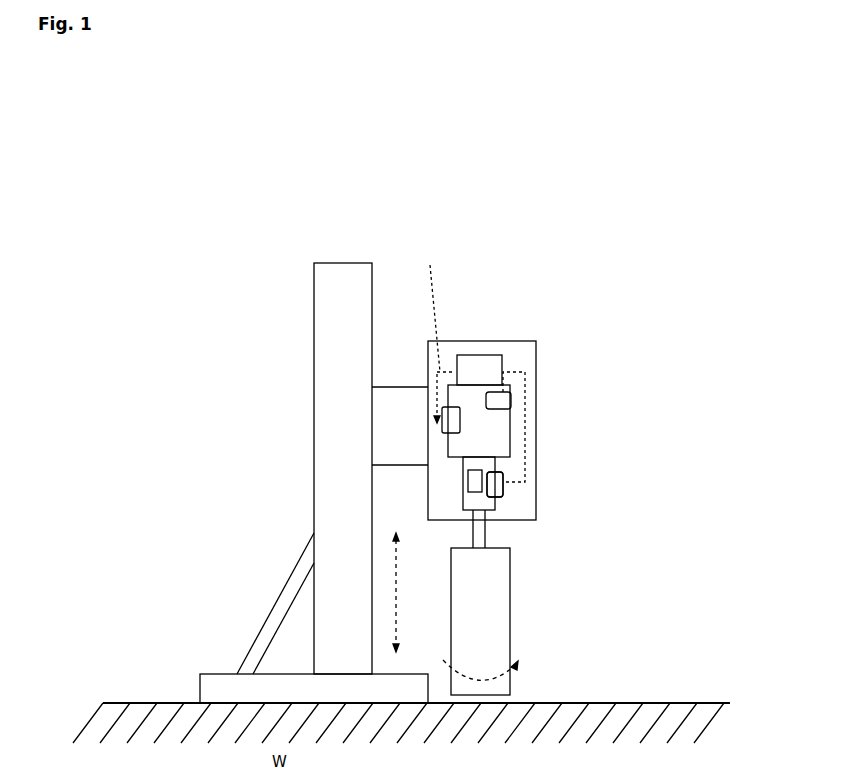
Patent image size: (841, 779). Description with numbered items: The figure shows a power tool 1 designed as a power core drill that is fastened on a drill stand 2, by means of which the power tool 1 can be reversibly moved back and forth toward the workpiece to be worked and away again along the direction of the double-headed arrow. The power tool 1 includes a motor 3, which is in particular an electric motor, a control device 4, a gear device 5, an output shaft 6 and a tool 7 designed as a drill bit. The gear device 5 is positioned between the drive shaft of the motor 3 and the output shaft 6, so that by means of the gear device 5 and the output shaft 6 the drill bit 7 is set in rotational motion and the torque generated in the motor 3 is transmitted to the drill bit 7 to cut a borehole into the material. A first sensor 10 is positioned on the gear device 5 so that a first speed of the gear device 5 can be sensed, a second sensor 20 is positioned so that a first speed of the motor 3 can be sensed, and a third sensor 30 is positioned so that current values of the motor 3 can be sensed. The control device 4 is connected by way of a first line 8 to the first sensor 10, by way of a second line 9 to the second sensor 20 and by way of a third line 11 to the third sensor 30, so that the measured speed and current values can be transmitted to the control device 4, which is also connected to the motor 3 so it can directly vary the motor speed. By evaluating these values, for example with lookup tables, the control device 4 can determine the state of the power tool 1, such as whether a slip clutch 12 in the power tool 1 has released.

The power tool 1 is at (570, 241).
The drill stand 2 is at (286, 456).
The motor 3 is at (482, 437).
The control device 4 is at (478, 358).
The gear device 5 is at (483, 466).
The output shaft 6 is at (488, 536).
The tool 7 is at (500, 617).
The first line 8 is at (437, 329).
The second line 9 is at (512, 392).
The first sensor 10 is at (457, 425).
The third line 11 is at (524, 377).
The slip clutch 12 is at (492, 481).
The second sensor 20 is at (495, 490).
The third sensor 30 is at (497, 401).